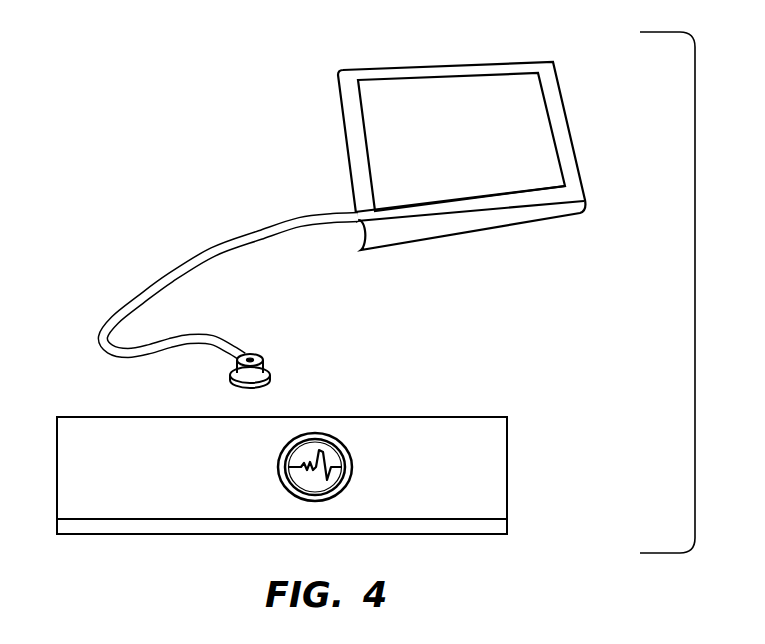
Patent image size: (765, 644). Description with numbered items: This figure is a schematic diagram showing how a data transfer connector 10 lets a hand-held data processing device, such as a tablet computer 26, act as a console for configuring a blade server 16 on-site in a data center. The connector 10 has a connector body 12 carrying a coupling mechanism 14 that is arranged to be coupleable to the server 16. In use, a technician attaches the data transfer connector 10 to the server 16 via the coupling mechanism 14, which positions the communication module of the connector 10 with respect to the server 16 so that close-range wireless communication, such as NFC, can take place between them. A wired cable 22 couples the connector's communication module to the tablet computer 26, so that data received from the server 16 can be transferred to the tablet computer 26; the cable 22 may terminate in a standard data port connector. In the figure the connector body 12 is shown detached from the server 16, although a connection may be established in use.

The data transfer connector 10 is at (110, 252).
The connector body 12 is at (262, 358).
The coupling mechanism 14 is at (272, 373).
The blade server 16 is at (428, 417).
The wired cable 22 is at (187, 270).
The tablet computer 26 is at (540, 112).